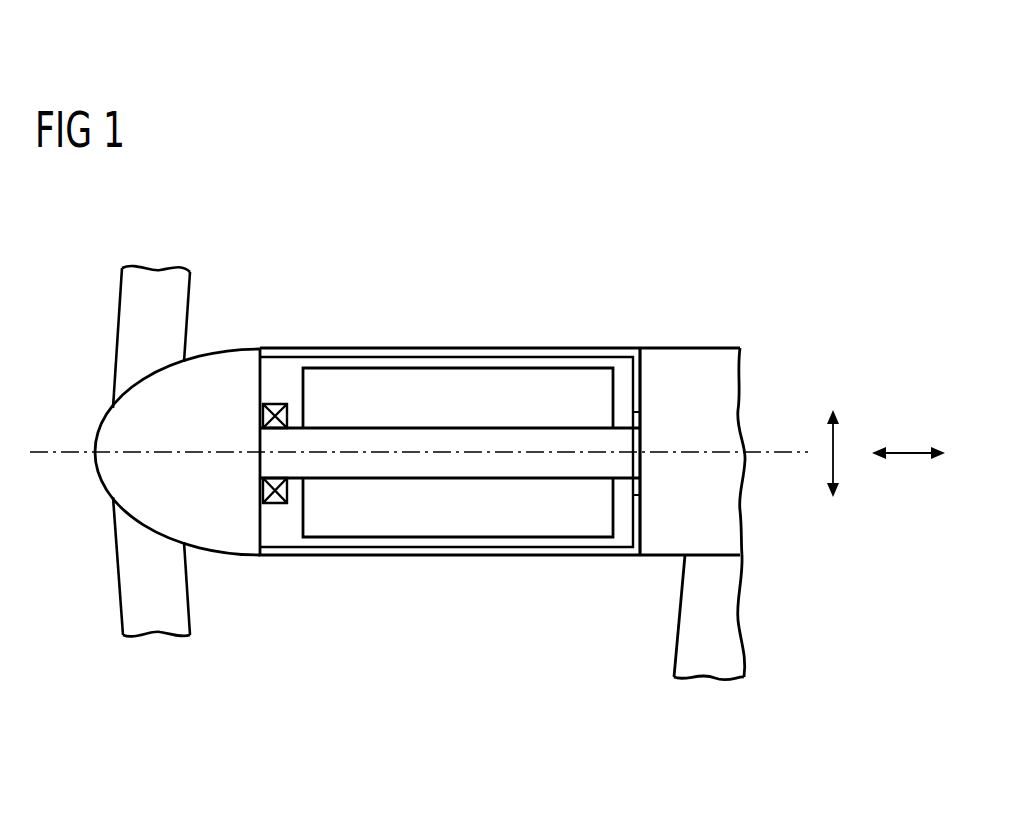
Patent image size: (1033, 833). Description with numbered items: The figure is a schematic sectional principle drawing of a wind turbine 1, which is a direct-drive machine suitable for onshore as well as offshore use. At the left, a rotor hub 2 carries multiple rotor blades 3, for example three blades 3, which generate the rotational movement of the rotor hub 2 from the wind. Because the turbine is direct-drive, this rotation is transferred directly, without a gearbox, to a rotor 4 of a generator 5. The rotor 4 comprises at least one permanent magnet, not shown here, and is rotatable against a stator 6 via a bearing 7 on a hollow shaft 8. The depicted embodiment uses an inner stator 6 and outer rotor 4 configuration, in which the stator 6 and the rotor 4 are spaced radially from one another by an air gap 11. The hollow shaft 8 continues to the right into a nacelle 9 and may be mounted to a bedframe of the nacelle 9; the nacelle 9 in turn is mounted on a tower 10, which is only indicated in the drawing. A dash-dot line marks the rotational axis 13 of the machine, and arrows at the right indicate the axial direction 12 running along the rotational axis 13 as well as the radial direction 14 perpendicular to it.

The wind turbine 1 is at (797, 253).
The rotor hub 2 is at (113, 430).
The rotor blades 3 is at (133, 326).
The rotor 4 is at (392, 352).
The generator 5 is at (565, 323).
The stator 6 is at (331, 396).
The bearing 7 is at (272, 404).
The hollow shaft 8 is at (437, 428).
The nacelle 9 is at (690, 348).
The tower 10 is at (698, 637).
The air gap 11 is at (492, 362).
The axial direction 12 is at (907, 452).
The rotational axis 13 is at (770, 452).
The radial direction 14 is at (835, 470).